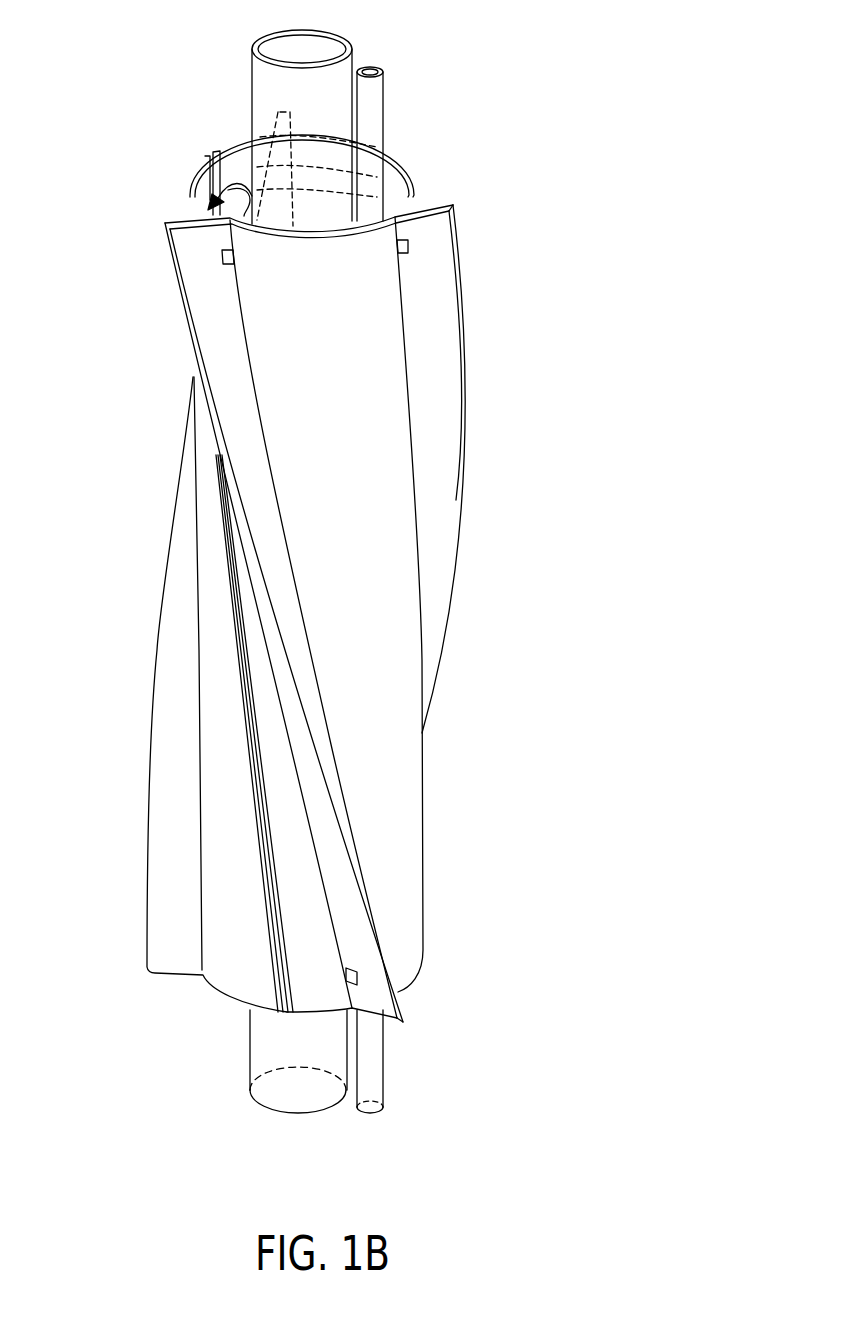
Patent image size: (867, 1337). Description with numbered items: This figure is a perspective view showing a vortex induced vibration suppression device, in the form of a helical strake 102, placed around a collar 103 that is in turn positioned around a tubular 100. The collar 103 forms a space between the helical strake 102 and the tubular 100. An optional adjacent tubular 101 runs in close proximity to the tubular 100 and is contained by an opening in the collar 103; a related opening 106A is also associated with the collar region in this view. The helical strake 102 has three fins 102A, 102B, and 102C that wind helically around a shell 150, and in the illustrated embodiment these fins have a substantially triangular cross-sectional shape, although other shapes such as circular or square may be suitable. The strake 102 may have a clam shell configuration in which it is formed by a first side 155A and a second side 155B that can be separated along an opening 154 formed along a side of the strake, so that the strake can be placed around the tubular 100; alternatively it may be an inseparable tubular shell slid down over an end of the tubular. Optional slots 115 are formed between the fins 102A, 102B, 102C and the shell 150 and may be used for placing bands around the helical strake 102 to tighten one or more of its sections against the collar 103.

The tubular 100 is at (262, 75).
The adjacent tubular 101 is at (368, 93).
The helical strake 102 is at (305, 557).
The first fin 102A is at (458, 232).
The second fin 102B is at (190, 328).
The third fin 102C is at (152, 746).
The collar 103 is at (198, 188).
The tab 106A is at (207, 160).
The slots 115 is at (222, 262).
The shell 150 is at (355, 538).
The opening 154 is at (216, 152).
The first side 155A is at (410, 153).
The second side 155B is at (323, 233).